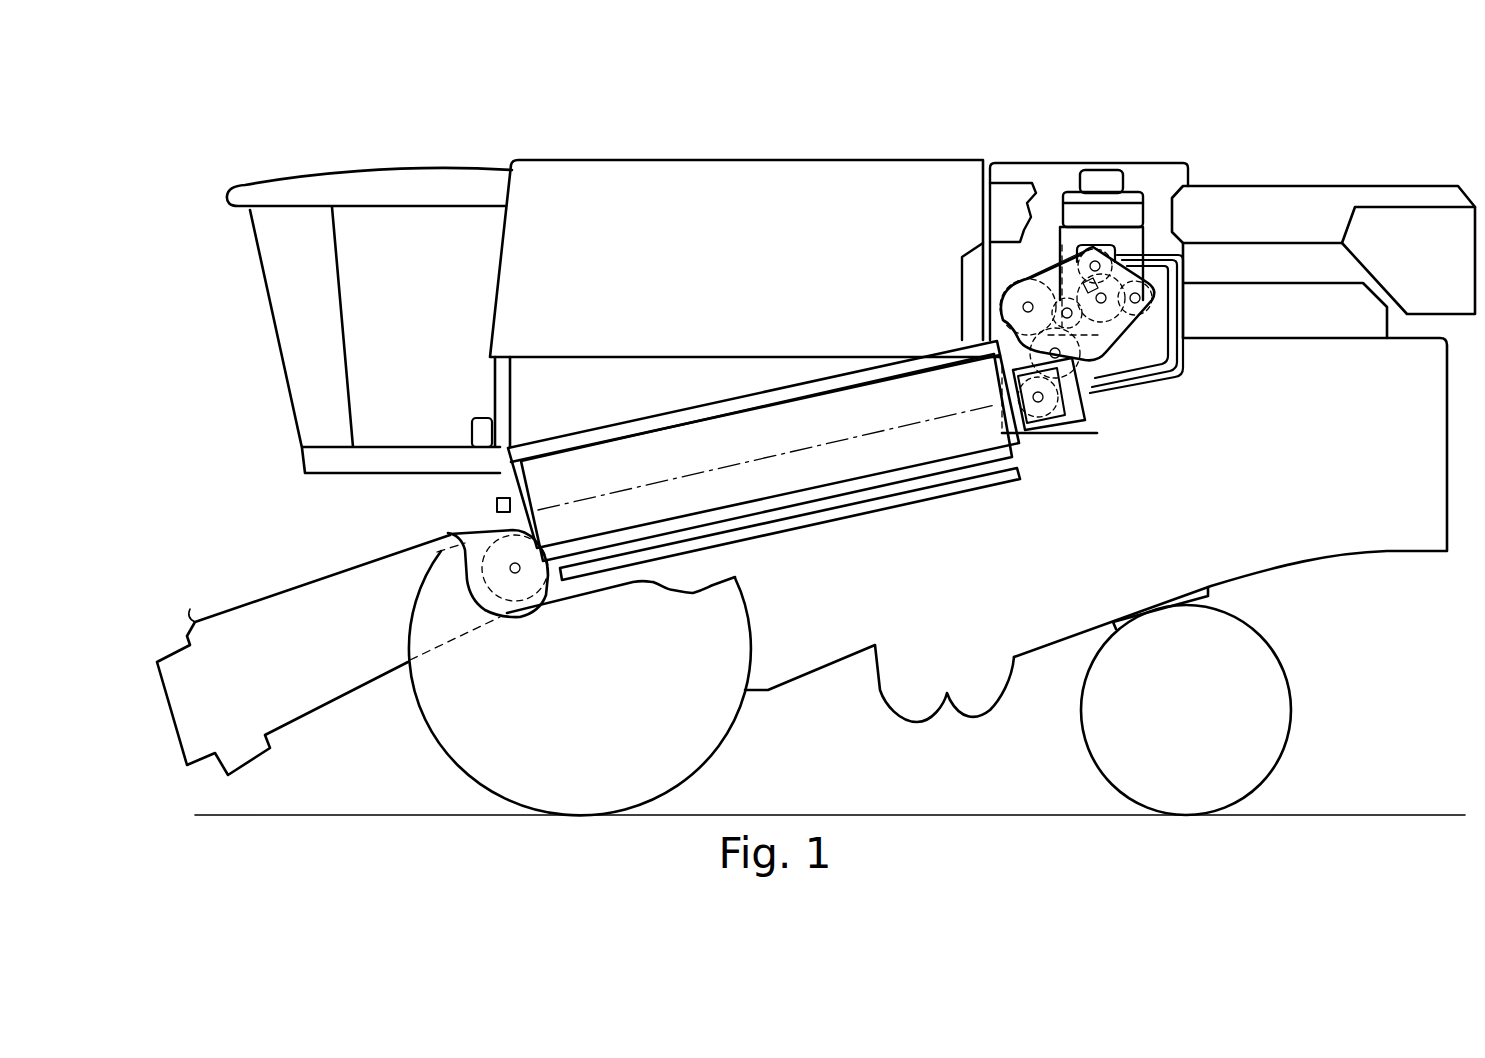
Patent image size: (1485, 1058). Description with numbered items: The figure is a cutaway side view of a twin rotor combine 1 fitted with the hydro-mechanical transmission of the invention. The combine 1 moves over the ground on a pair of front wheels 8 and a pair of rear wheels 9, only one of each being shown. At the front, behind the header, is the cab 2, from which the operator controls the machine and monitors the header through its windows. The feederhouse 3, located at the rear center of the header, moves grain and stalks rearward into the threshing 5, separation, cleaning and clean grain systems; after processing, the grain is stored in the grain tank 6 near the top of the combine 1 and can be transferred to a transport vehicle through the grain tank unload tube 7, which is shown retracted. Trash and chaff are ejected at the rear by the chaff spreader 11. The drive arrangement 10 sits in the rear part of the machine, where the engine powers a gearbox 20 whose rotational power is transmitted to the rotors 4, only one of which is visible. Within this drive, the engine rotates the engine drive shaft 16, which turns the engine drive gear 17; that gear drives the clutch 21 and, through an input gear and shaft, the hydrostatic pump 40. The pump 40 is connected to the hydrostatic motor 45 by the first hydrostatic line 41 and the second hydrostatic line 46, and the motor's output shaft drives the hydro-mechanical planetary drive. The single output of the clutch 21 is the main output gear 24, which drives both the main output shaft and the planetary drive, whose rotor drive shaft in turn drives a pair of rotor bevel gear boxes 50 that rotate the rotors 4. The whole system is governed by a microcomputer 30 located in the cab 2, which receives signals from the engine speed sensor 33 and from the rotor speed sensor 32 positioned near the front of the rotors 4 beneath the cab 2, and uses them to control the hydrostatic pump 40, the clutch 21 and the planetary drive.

The combine 1 is at (810, 102).
The cab 2 is at (387, 187).
The feederhouse 3 is at (257, 615).
The rotor 4 is at (720, 417).
The threshing system 5 is at (855, 603).
The grain tank 6 is at (598, 187).
The grain tank unload tube 7 is at (1325, 186).
The front wheel 8 is at (458, 728).
The rear wheel 9 is at (1283, 709).
The drive arrangement 10 is at (1047, 233).
The chaff spreader 11 is at (1404, 551).
The engine drive shaft 16 is at (1107, 180).
The engine drive gear 17 is at (1110, 318).
The gearbox 20 is at (1100, 296).
The clutch 21 is at (1078, 318).
The main output gear 24 is at (1083, 323).
The microcomputer 30 is at (470, 423).
The rotor speed sensor 32 is at (497, 505).
The engine speed sensor 33 is at (1103, 300).
The hydrostatic pump 40 is at (1128, 250).
The first hydrostatic line 41 is at (1157, 272).
The hydrostatic motor 45 is at (1080, 412).
The second hydrostatic line 46 is at (1177, 303).
The rotor bevel gear box 50 is at (1047, 422).